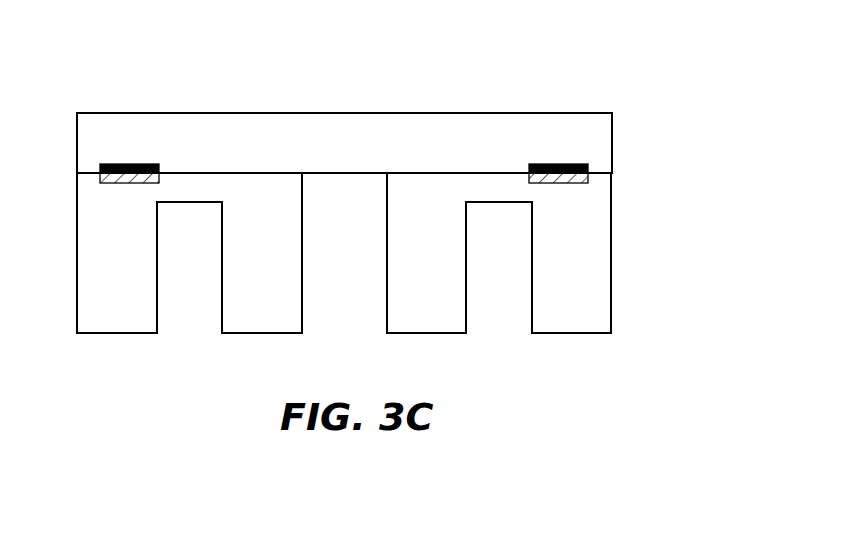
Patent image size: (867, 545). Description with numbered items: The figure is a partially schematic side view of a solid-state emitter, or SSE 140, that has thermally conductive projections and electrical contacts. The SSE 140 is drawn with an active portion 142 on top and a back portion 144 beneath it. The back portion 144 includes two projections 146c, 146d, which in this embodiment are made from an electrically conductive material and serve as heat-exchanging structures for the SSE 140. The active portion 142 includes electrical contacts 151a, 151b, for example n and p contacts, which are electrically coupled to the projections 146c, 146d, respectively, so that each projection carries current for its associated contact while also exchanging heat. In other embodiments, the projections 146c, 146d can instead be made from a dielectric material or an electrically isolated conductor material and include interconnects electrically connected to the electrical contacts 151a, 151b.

The SSE 140 is at (414, 204).
The active portion 142 is at (588, 140).
The back portion 144 is at (306, 281).
The projection 146c is at (285, 328).
The projection 146d is at (595, 328).
The electrical contact 151a is at (120, 164).
The electrical contact 151b is at (572, 164).